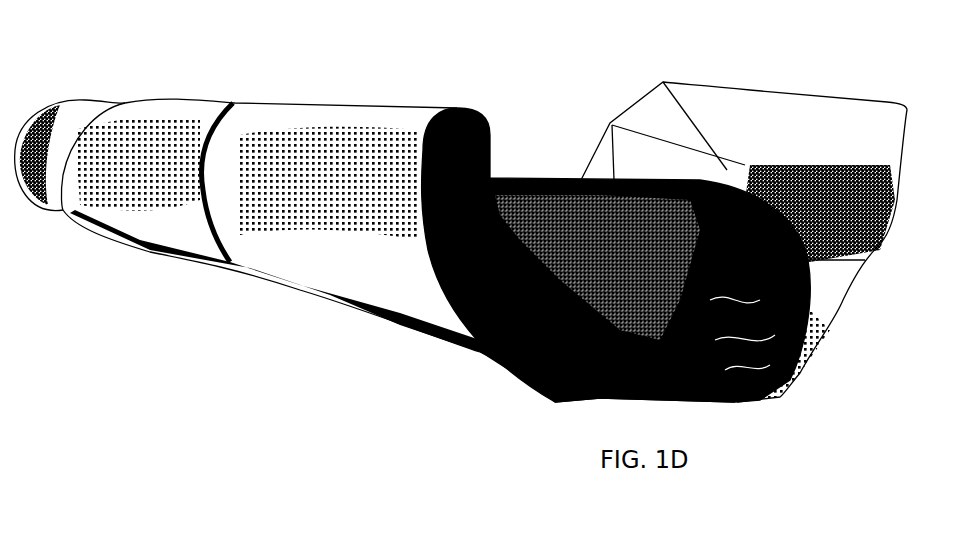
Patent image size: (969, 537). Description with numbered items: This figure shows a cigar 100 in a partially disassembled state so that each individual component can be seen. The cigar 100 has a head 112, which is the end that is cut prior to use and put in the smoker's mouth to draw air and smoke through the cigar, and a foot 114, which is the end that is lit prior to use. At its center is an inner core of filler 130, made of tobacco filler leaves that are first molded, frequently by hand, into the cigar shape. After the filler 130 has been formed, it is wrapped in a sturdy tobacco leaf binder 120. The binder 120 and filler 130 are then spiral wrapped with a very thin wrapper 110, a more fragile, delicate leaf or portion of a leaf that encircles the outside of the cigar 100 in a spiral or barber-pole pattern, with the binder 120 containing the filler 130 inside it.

The cigar 100 is at (213, 336).
The wrapper 110 is at (325, 131).
The head 112 is at (75, 90).
The foot 114 is at (742, 416).
The binder 120 is at (538, 206).
The filler 130 is at (748, 272).